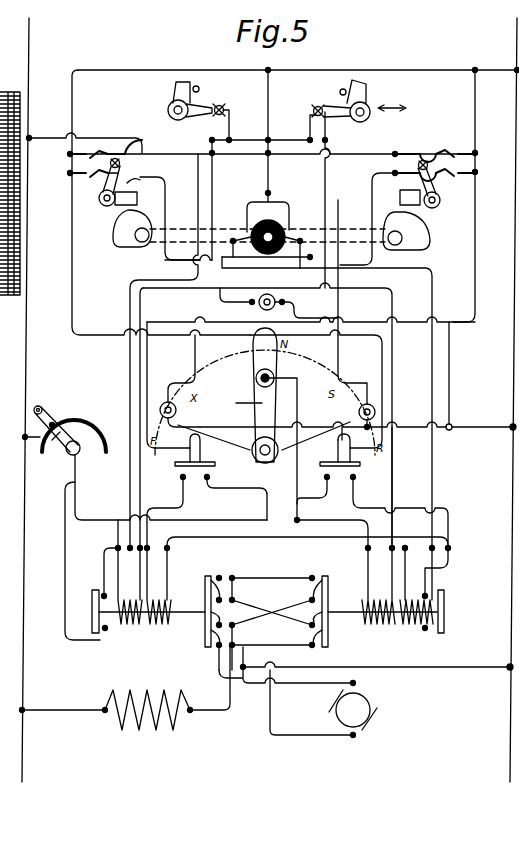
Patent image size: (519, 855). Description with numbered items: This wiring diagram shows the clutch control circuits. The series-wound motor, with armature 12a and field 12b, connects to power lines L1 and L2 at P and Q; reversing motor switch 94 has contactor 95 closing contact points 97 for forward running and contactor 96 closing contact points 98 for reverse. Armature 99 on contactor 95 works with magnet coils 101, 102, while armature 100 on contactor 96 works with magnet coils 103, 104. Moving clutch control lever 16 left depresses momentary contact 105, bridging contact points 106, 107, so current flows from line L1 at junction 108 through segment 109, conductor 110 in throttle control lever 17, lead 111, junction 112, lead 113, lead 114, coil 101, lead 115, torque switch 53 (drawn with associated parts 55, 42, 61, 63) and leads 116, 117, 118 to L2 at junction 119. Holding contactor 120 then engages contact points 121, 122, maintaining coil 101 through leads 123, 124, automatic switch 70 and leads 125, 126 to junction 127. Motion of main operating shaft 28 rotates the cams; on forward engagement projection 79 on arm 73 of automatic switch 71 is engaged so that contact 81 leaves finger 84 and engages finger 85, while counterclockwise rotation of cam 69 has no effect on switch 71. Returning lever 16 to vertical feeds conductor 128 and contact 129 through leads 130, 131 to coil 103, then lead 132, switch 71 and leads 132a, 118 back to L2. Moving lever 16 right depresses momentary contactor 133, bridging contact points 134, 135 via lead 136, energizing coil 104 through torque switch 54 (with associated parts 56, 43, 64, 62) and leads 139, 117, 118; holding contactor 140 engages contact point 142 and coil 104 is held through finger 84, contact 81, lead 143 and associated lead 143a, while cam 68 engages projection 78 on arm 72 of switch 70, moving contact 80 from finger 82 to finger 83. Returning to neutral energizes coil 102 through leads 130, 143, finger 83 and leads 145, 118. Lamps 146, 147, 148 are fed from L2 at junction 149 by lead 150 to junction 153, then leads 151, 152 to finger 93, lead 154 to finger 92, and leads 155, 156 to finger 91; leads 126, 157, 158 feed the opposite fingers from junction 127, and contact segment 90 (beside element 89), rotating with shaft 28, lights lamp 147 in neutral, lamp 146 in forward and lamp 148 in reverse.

The power line L1 is at (31, 768).
The power line L2 is at (510, 757).
The lead 118 is at (303, 70).
The junction 119 is at (515, 69).
The lead 132a is at (146, 70).
The relay armature plate 55 is at (172, 91).
The torque switch 53 is at (167, 110).
The contact 42 is at (199, 86).
The contact 61 is at (220, 105).
The conductor 63 is at (232, 116).
The lead 116 is at (254, 140).
The lead 117 is at (270, 112).
The relay armature 56 is at (366, 90).
The contact 43 is at (340, 90).
The contact 64 is at (310, 112).
The contact 62 is at (313, 106).
The lead 139 is at (302, 138).
The torque switch 54 is at (400, 108).
The lead 145 is at (470, 118).
The junction 127 is at (85, 137).
The lead 126 is at (105, 138).
The lead 125 is at (342, 153).
The contact finger 85 is at (72, 157).
The contact finger 84 is at (125, 150).
The contact 81 is at (120, 164).
The arm 73 is at (137, 197).
The automatic switch 71 is at (101, 242).
The cam 69 is at (114, 242).
The projection 79 is at (126, 236).
The lead 143 is at (167, 258).
The contact finger 82 is at (418, 146).
The contact finger 83 is at (458, 150).
The contact 80 is at (418, 165).
The arm 72 is at (400, 197).
The projection 78 is at (402, 209).
The automatic switch 70 is at (445, 214).
The cam 68 is at (426, 240).
The lead 124 is at (372, 190).
The main operating shaft 28 is at (356, 226).
The motor 89 is at (268, 228).
The lead 158 is at (262, 176).
The lead 157 is at (225, 163).
The contact finger 92 is at (240, 236).
The contact finger 93 is at (236, 246).
The contact finger 91 is at (276, 266).
The contact segment 90 is at (260, 271).
The armature 99 is at (304, 256).
The lead 156 is at (242, 306).
The lamp 147 is at (276, 296).
The lead 132 is at (116, 327).
The junction 108 is at (21, 437).
The segment 109 is at (85, 418).
The electric conductor 110 is at (47, 448).
The throttle control lever 17 is at (38, 406).
The lead 111 is at (76, 454).
The lead 152 is at (200, 362).
The lamp 146 is at (170, 396).
The clutch control lever 16 is at (275, 345).
The contact 129 is at (256, 375).
The lead 130 is at (297, 390).
The conductor 128 is at (244, 395).
The lead 151 is at (232, 420).
The lead 154 is at (340, 355).
The lamp 148 is at (368, 404).
The junction 153 is at (348, 440).
The momentary contactor 133 is at (334, 452).
The momentary contact 105 is at (200, 447).
The contact point 106 is at (179, 476).
The contact point 107 is at (210, 476).
The contact point 134 is at (313, 490).
The contact point 135 is at (400, 512).
The junction point 112 is at (262, 490).
The lead 113 is at (237, 498).
The lead 136 is at (312, 502).
The lead 131 is at (332, 520).
The lead 115 is at (137, 492).
The lead 114 is at (178, 492).
The lead 155 is at (458, 352).
The lead 150 is at (492, 418).
The junction 149 is at (508, 428).
The conductor 143a is at (226, 537).
The lead 123 is at (104, 556).
The contact point 121 is at (106, 592).
The contactor 120 is at (98, 582).
The contact point 122 is at (106, 632).
The magnet coil 101 is at (127, 595).
The magnet coil 102 is at (157, 595).
The reversing motor switch 94 is at (270, 574).
The contactor 95 is at (208, 570).
The contactor 96 is at (324, 570).
The contact points 97 is at (222, 610).
The contact points 98 is at (320, 630).
The armature 100 is at (345, 608).
The magnet coil 103 is at (377, 595).
The magnet coil 104 is at (422, 595).
The holding contactor 140 is at (441, 586).
The contact point 142 is at (426, 632).
The connection point P is at (14, 703).
The connection point Q is at (508, 670).
The field 12b is at (126, 697).
The armature 12a is at (366, 702).